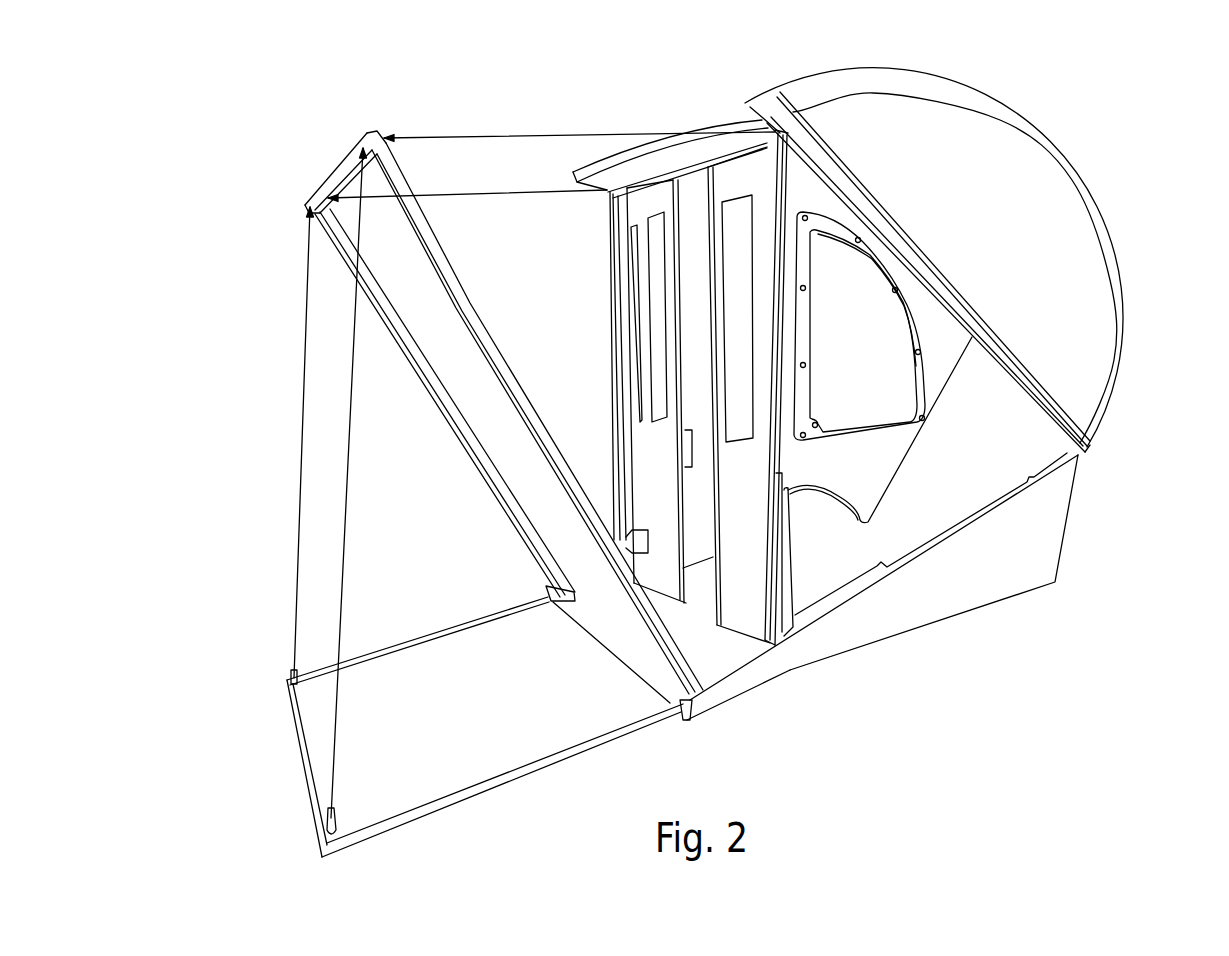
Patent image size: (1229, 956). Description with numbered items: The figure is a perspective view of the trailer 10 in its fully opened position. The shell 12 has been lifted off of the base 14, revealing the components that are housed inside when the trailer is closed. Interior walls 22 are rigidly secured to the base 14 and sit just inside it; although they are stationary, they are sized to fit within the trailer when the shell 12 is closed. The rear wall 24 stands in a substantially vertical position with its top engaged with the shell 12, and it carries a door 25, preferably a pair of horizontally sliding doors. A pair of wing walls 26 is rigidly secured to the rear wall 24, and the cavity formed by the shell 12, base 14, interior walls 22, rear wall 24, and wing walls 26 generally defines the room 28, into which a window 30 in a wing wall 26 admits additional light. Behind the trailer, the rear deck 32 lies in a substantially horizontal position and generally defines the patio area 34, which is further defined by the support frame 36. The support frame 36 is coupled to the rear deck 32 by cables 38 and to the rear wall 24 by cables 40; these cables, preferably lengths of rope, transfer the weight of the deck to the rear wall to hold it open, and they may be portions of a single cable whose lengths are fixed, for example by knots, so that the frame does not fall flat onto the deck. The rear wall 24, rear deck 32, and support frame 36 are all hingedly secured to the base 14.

The trailer 10 is at (260, 150).
The shell 12 is at (1018, 265).
The base 14 is at (1025, 542).
The interior walls 22 is at (1002, 415).
The rear wall 24 is at (778, 543).
The door 25 is at (740, 618).
The wing walls 26 is at (877, 490).
The room 28 is at (698, 228).
The window 30 is at (868, 287).
The rear deck 32 is at (580, 701).
The patio area 34 is at (273, 363).
The support frame 36 is at (330, 183).
The cables 38 is at (303, 442).
The cables 40 is at (485, 190).